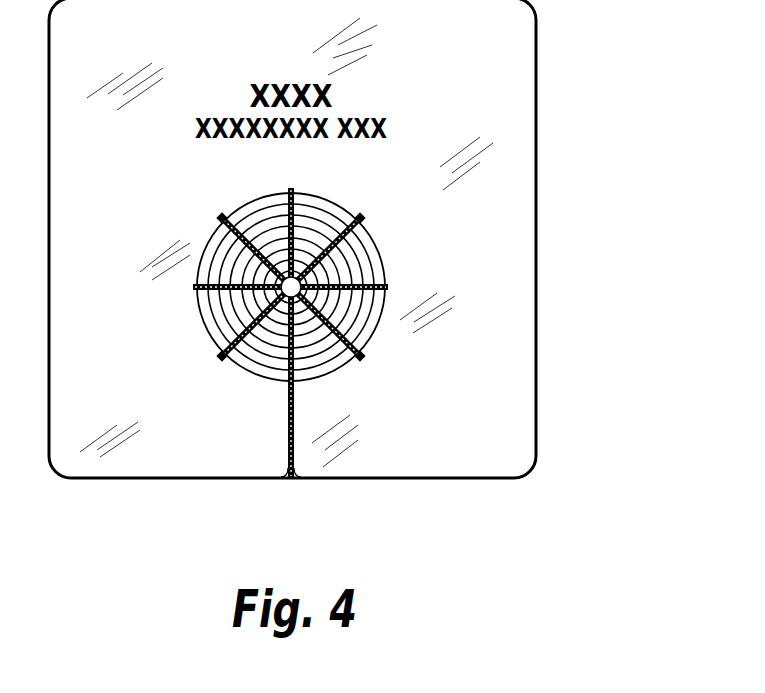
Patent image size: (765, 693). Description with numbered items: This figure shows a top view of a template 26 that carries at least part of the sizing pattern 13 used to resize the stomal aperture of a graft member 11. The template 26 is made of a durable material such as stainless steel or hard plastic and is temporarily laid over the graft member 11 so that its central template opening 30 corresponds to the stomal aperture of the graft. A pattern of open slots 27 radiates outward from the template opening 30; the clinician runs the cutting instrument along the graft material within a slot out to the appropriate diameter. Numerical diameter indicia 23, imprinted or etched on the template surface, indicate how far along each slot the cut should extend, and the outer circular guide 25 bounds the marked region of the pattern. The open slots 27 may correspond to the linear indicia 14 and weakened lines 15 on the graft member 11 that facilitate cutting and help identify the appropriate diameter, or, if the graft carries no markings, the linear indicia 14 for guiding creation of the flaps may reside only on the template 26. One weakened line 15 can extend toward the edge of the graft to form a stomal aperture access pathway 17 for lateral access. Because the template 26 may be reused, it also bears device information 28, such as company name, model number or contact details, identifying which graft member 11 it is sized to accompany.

The graft member 11 is at (292, 481).
The sizing pattern 13 is at (420, 253).
The linear indicia 14 is at (246, 358).
The weakened line 15 is at (381, 274).
The stomal aperture access pathway 17 is at (302, 442).
The numerical diameter indicia 23 is at (402, 237).
The outer ring 25 is at (344, 184).
The template 26 is at (515, 232).
The open slots 27 is at (340, 297).
The device information 28 is at (453, 51).
The template opening 30 is at (352, 328).